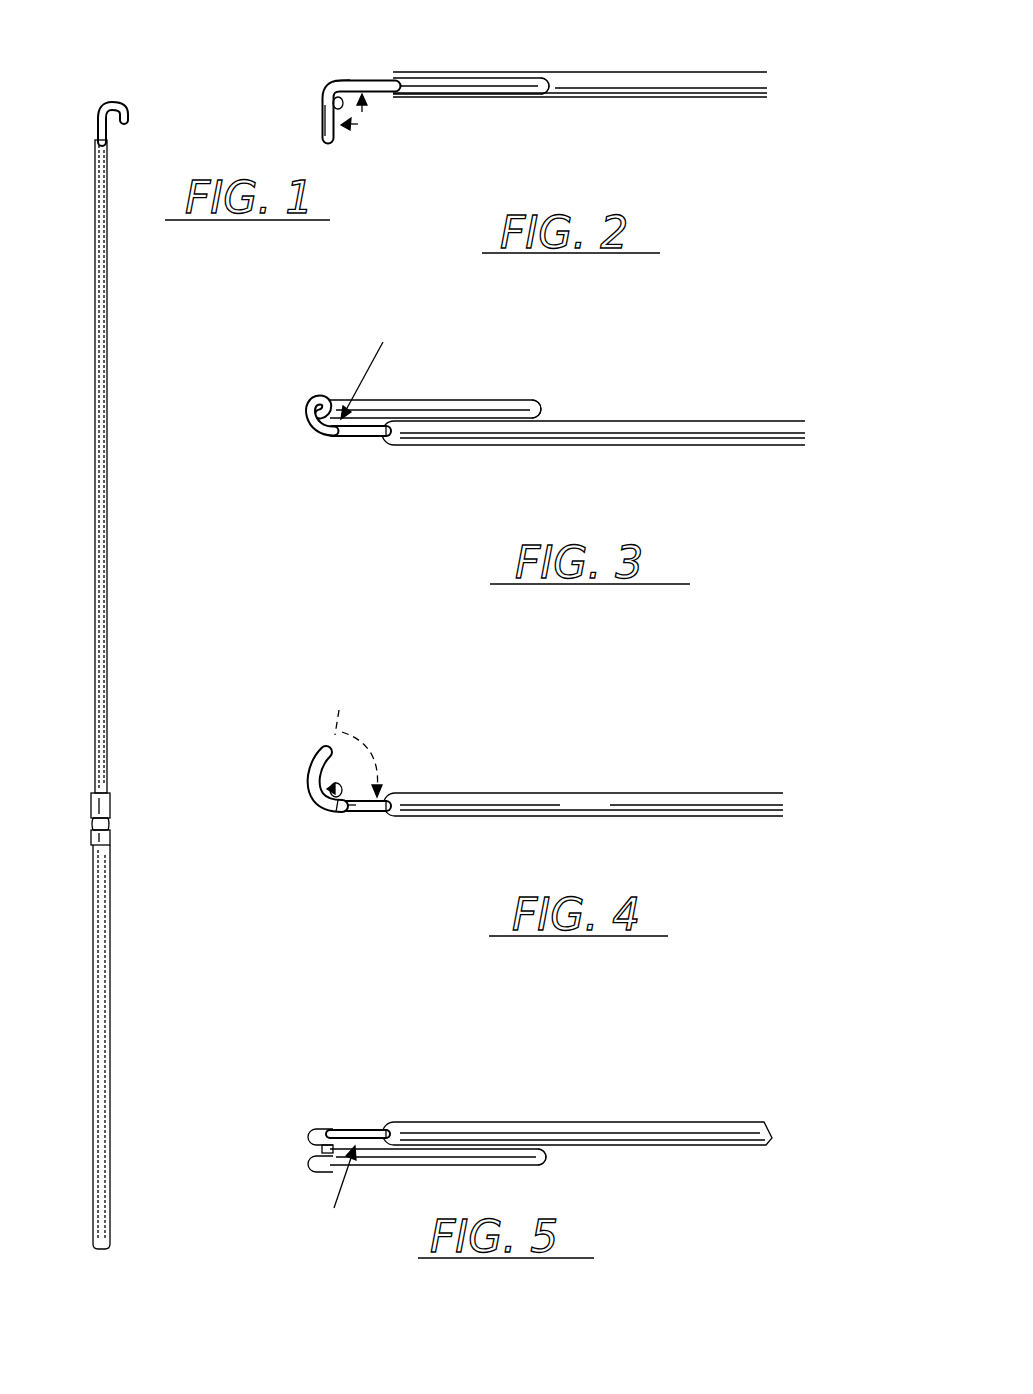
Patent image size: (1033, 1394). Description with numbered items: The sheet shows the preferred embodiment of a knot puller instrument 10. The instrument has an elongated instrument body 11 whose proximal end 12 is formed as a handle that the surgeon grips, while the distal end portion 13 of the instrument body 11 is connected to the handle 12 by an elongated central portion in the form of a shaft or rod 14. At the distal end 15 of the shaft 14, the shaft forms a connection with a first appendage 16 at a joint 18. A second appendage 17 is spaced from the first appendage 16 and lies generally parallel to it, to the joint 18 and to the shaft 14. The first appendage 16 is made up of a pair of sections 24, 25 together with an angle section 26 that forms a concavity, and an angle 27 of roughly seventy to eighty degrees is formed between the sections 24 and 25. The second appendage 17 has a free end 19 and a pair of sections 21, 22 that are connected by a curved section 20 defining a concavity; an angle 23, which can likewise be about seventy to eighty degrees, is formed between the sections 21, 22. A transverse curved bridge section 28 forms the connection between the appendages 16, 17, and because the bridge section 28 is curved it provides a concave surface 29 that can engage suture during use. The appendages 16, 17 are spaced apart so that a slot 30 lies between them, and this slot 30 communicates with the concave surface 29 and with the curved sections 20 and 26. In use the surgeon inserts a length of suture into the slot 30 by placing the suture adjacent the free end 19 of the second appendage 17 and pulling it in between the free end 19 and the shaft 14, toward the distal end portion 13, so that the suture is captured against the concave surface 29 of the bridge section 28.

In FIG. 1, the knot puller instrument 10 is at (157, 90).
In FIG. 1, the elongated instrument body 11 is at (107, 728).
In FIG. 1, the proximal end 12 is at (107, 1070).
In FIG. 1, the distal end portion 13 is at (100, 120).
In FIG. 2, the distal end portion 13 is at (425, 76).
In FIG. 1, the shaft 14 is at (102, 575).
In FIG. 2, the shaft 14 is at (700, 74).
In FIG. 3, the shaft 14 is at (658, 445).
In FIG. 4, the shaft 14 is at (655, 800).
In FIG. 5, the shaft 14 is at (583, 1133).
In FIG. 3, the distal end 15 is at (390, 440).
In FIG. 4, the distal end 15 is at (390, 815).
In FIG. 5, the distal end 15 is at (392, 1130).
In FIG. 3, the first appendage 16 is at (350, 437).
In FIG. 4, the first appendage 16 is at (345, 812).
In FIG. 5, the first appendage 16 is at (345, 1130).
In FIG. 2, the second appendage 17 is at (478, 94).
In FIG. 3, the second appendage 17 is at (395, 407).
In FIG. 5, the second appendage 17 is at (370, 1160).
In FIG. 3, the joint 18 is at (378, 438).
In FIG. 4, the joint 18 is at (380, 793).
In FIG. 5, the joint 18 is at (380, 1130).
In FIG. 2, the free end 19 is at (560, 78).
In FIG. 3, the free end 19 is at (545, 413).
In FIG. 5, the free end 19 is at (548, 1157).
In FIG. 2, the curved section 20 is at (338, 100).
In FIG. 2, the section 21 is at (326, 122).
In FIG. 2, the section 22 is at (344, 76).
In FIG. 2, the angle 23 is at (362, 120).
In FIG. 4, the section 24 is at (322, 760).
In FIG. 4, the section 25 is at (338, 812).
In FIG. 4, the angle section 26 is at (330, 812).
In FIG. 4, the angle 27 is at (345, 730).
In FIG. 3, the bridge section 28 is at (315, 437).
In FIG. 5, the bridge section 28 is at (322, 1130).
In FIG. 5, the concave surface 29 is at (325, 1150).
In FIG. 3, the slot 30 is at (381, 372).
In FIG. 5, the slot 30 is at (334, 1197).